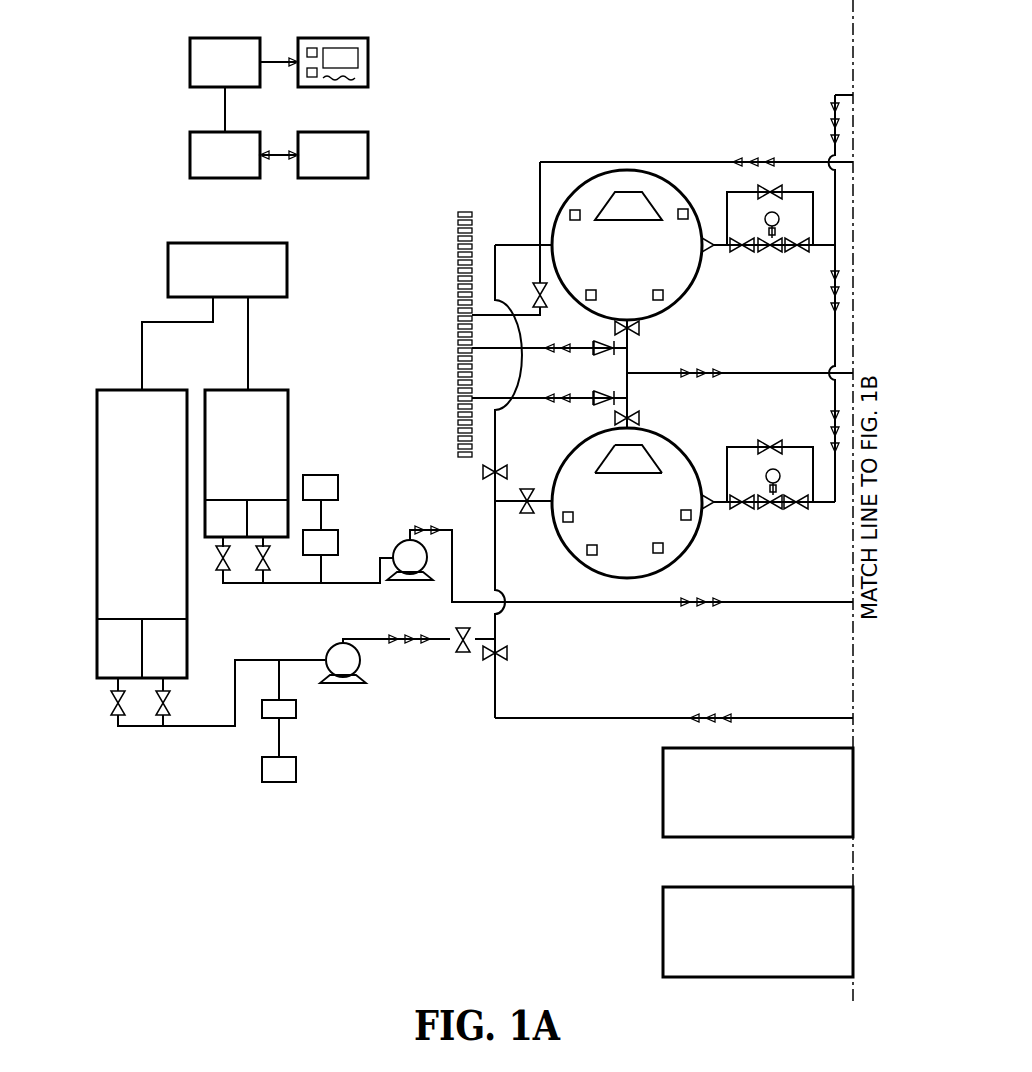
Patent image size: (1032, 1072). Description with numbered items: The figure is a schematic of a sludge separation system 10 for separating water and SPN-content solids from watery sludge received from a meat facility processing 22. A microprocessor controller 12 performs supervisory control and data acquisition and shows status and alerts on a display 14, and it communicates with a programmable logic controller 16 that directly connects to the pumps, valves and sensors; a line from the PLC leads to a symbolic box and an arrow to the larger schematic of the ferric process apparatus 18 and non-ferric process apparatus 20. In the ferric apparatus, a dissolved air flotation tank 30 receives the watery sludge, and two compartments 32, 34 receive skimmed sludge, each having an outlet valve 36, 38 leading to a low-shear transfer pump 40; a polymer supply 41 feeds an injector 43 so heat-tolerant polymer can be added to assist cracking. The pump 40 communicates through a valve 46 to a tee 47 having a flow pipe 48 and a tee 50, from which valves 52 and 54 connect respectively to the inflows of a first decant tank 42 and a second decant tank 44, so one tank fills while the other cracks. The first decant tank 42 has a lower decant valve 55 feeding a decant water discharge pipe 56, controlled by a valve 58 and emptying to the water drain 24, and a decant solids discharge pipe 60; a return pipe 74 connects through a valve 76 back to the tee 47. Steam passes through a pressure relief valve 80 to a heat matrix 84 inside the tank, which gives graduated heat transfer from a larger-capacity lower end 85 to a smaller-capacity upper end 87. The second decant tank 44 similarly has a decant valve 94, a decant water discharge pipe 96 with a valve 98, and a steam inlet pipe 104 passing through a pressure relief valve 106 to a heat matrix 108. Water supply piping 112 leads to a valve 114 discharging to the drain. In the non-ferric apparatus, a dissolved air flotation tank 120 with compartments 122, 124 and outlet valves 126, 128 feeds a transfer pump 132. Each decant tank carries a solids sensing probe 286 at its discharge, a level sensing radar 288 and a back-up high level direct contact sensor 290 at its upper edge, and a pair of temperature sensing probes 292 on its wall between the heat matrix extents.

The sludge separation system 10 is at (590, 64).
The microprocessor controller 12 is at (190, 62).
The display 14 is at (368, 55).
The programmable logic controller 16 is at (190, 158).
The ferric process apparatus 18 is at (628, 90).
The non-ferric process apparatus 20 is at (340, 132).
The meat facility processing 22 is at (190, 243).
The water drain 24 is at (457, 250).
The dissolved air flotation tank 30 is at (120, 420).
The compartment 32 is at (102, 685).
The compartment 34 is at (178, 642).
The valve 36 is at (110, 718).
The valve 38 is at (170, 705).
The transfer pump 40 is at (348, 680).
The polymer supply 41 is at (338, 487).
The first decant tank 42 is at (690, 550).
The injector 43 is at (338, 543).
The second decant tank 44 is at (693, 290).
The valve 46 is at (460, 652).
The tee 47 is at (497, 638).
The flow pipe 48 is at (495, 560).
The tee 50 is at (495, 495).
The valve 52 is at (525, 490).
The valve 54 is at (482, 470).
The decant valve 55 is at (640, 410).
The decant water discharge pipe 56 is at (545, 398).
The valve 58 is at (598, 400).
The decant solids discharge pipe 60 is at (742, 373).
The return pipe 74 is at (605, 718).
The valve 76 is at (502, 665).
The pressure relief valve 80 is at (790, 512).
The heat matrix 84 is at (655, 460).
The lower end 85 is at (622, 475).
The upper end 87 is at (612, 447).
The decant valve 94 is at (640, 328).
The decant water discharge pipe 96 is at (538, 348).
The valve 98 is at (592, 352).
The steam inlet pipe 104 is at (718, 248).
The pressure relief valve 106 is at (748, 213).
The heat matrix 108 is at (623, 221).
The piping 112 is at (620, 162).
The valve 114 is at (535, 290).
The dissolved air flotation tank 120 is at (230, 400).
The compartment 122 is at (265, 508).
The compartment 124 is at (218, 505).
The valve 126 is at (216, 558).
The valve 128 is at (262, 573).
The transfer pump 132 is at (432, 566).
The solids sensing probe 286 is at (660, 316).
The level sensing radar 288 is at (592, 290).
The high level direct contact sensor 290 is at (655, 290).
The temperature sensing probes 292 is at (563, 209).